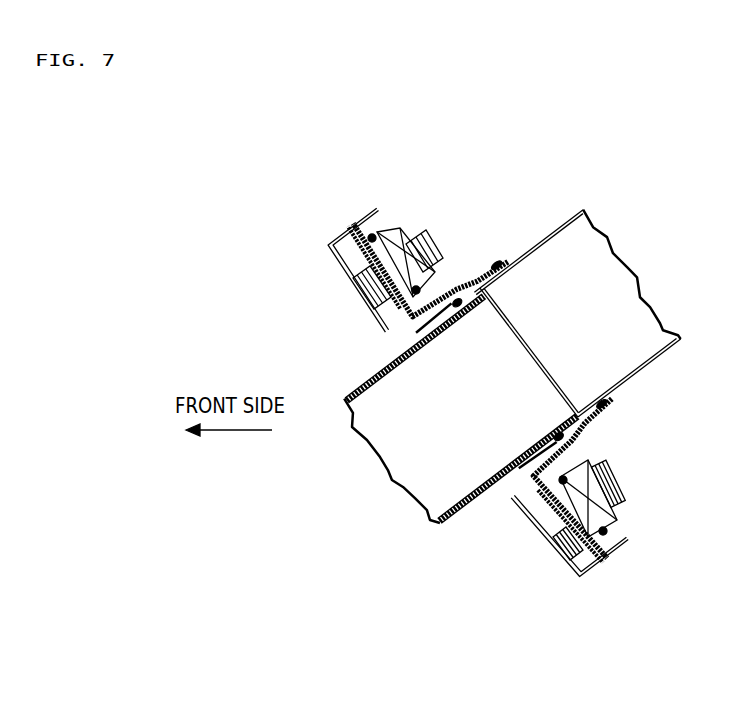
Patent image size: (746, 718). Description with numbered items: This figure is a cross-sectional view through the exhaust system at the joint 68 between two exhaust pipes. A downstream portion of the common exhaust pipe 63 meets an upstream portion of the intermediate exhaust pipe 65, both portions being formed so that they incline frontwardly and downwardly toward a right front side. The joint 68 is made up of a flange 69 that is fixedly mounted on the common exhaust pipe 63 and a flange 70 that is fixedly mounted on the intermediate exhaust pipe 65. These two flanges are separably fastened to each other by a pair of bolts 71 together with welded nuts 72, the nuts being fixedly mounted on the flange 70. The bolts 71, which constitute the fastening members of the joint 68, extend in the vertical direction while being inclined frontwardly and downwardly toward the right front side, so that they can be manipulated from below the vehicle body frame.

The common exhaust pipe 63 is at (393, 378).
The intermediate exhaust pipe 65 is at (547, 240).
The joint 68 is at (362, 215).
The flange 69 is at (600, 572).
The flange 70 is at (628, 549).
The bolts 71 is at (362, 288).
The welded nuts 72 is at (416, 234).